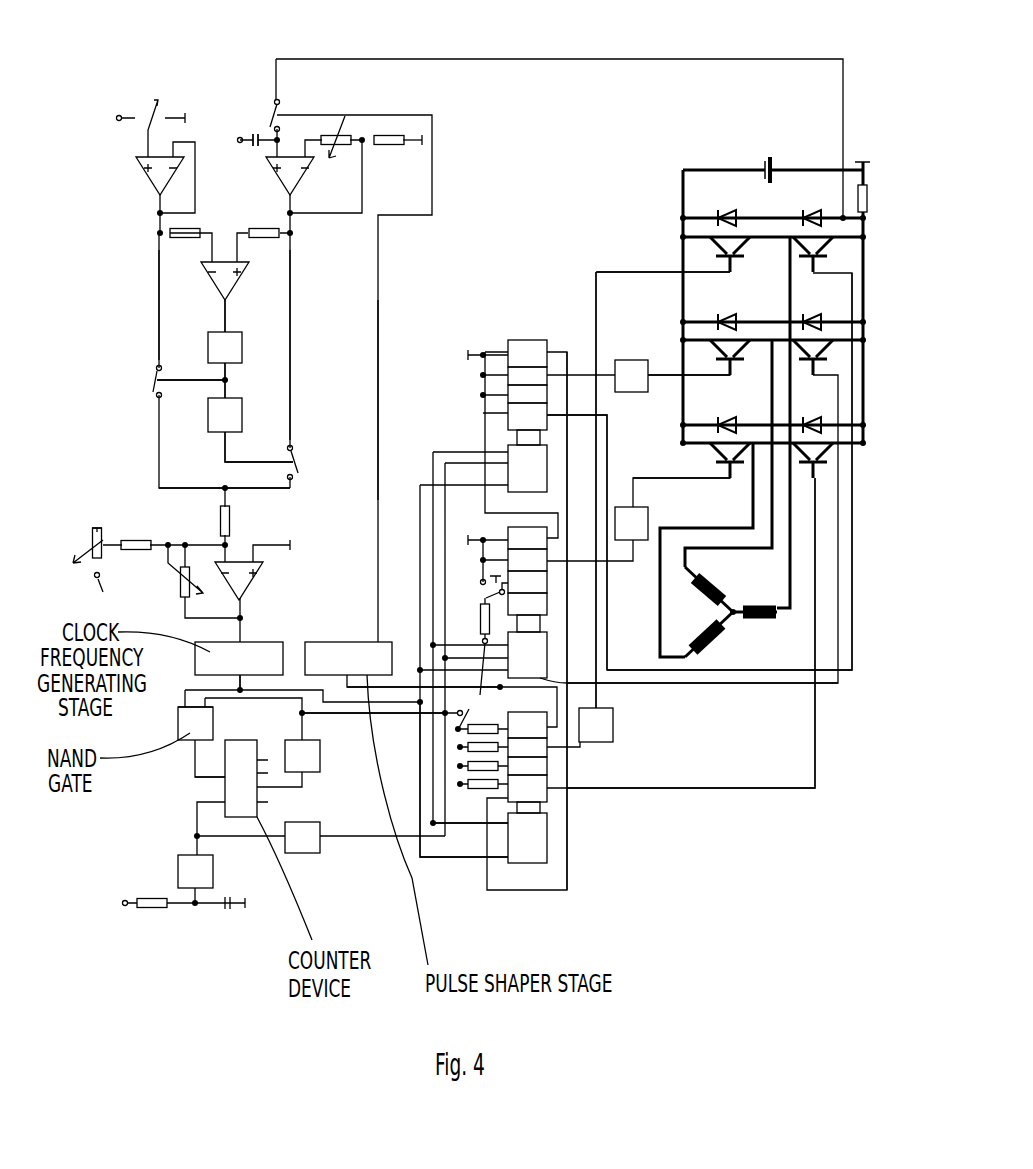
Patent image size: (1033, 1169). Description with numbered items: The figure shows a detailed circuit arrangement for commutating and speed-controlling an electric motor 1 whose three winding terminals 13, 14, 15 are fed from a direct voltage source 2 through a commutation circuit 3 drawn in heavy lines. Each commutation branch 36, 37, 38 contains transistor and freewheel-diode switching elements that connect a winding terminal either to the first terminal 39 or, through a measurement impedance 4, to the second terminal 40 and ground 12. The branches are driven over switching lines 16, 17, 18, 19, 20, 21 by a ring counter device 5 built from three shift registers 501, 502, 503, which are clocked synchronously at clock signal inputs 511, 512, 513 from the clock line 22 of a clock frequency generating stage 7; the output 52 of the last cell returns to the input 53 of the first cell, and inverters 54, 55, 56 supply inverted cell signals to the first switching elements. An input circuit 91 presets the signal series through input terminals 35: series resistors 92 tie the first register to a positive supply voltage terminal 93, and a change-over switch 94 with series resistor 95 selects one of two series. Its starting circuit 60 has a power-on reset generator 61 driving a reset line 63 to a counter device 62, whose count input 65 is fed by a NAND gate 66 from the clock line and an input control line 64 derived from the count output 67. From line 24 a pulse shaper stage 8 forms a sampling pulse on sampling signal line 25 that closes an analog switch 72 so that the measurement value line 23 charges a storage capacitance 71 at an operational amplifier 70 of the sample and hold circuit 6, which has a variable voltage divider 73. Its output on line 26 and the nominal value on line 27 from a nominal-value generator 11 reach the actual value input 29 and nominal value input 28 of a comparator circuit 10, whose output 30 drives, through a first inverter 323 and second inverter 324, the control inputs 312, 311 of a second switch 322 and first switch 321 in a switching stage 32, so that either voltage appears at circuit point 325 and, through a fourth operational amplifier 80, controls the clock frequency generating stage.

The electric motor 1 is at (733, 593).
The direct voltage source 2 is at (766, 174).
The commutation circuit 3 is at (897, 328).
The measurement impedance 4 is at (868, 198).
The ring counter device 5 is at (584, 236).
The sample and hold circuit 6 is at (372, 98).
The clock frequency generating stage 7 is at (195, 664).
The pulse shaper stage 8 is at (332, 640).
The comparator circuit 10 is at (212, 285).
The nominal-value generator 11 is at (127, 184).
The ground 12 is at (262, 921).
The winding terminal 13 is at (685, 527).
The winding terminal 14 is at (703, 549).
The winding terminal 15 is at (782, 585).
The switching line 16 is at (655, 790).
The switching line 17 is at (697, 688).
The switching line 18 is at (750, 670).
The switching line 19 is at (686, 478).
The switching line 20 is at (677, 372).
The switching line 21 is at (660, 270).
The clock line 22 is at (260, 692).
The measurement value line 23 is at (573, 59).
The line 24 is at (402, 682).
The sampling signal line 25 is at (377, 312).
The line 26 is at (291, 290).
The line 27 is at (158, 280).
The nominal value input 28 is at (212, 245).
The actual value input 29 is at (243, 248).
The output 30 is at (230, 318).
The switching stage 32 is at (279, 411).
The input terminals 35 is at (497, 352).
The commutation branch 36 is at (754, 442).
The commutation branch 37 is at (774, 328).
The commutation branch 38 is at (793, 216).
The first terminal 39 is at (762, 166).
The second terminal 40 is at (787, 168).
The output 52 is at (558, 350).
The input 53 is at (498, 798).
The first inverter 54 is at (648, 545).
The second inverter 55 is at (630, 393).
The third inverter 56 is at (612, 727).
The starting circuit 60 is at (174, 783).
The power-on reset generator 61 is at (207, 961).
The counter device 62 is at (245, 740).
The reset line 63 is at (232, 838).
The input control line 64 is at (333, 716).
The count input 65 is at (212, 780).
The NAND gate 66 is at (178, 728).
The count output 67 is at (287, 790).
The operational amplifier 70 is at (310, 170).
The storage capacitance 71 is at (256, 148).
The analog switch 72 is at (268, 126).
The variable voltage divider 73 is at (333, 128).
The fourth operational amplifier 80 is at (258, 582).
The input circuit 91 is at (389, 908).
The series resistors 92 is at (460, 784).
The positive supply voltage terminal 93 is at (122, 903).
The change-over switch 94 is at (485, 597).
The series resistor 95 is at (480, 621).
The control input 311 is at (252, 460).
The control input 312 is at (193, 380).
The first switch 321 is at (298, 455).
The second switch 322 is at (154, 387).
The first inverter 323 is at (242, 332).
The second inverter 324 is at (208, 400).
The circuit point 325 is at (225, 488).
The shift register 501 is at (525, 863).
The shift register 502 is at (540, 682).
The shift register 503 is at (532, 492).
The clock signal input 511 is at (475, 857).
The clock signal input 512 is at (468, 670).
The clock signal input 513 is at (497, 483).